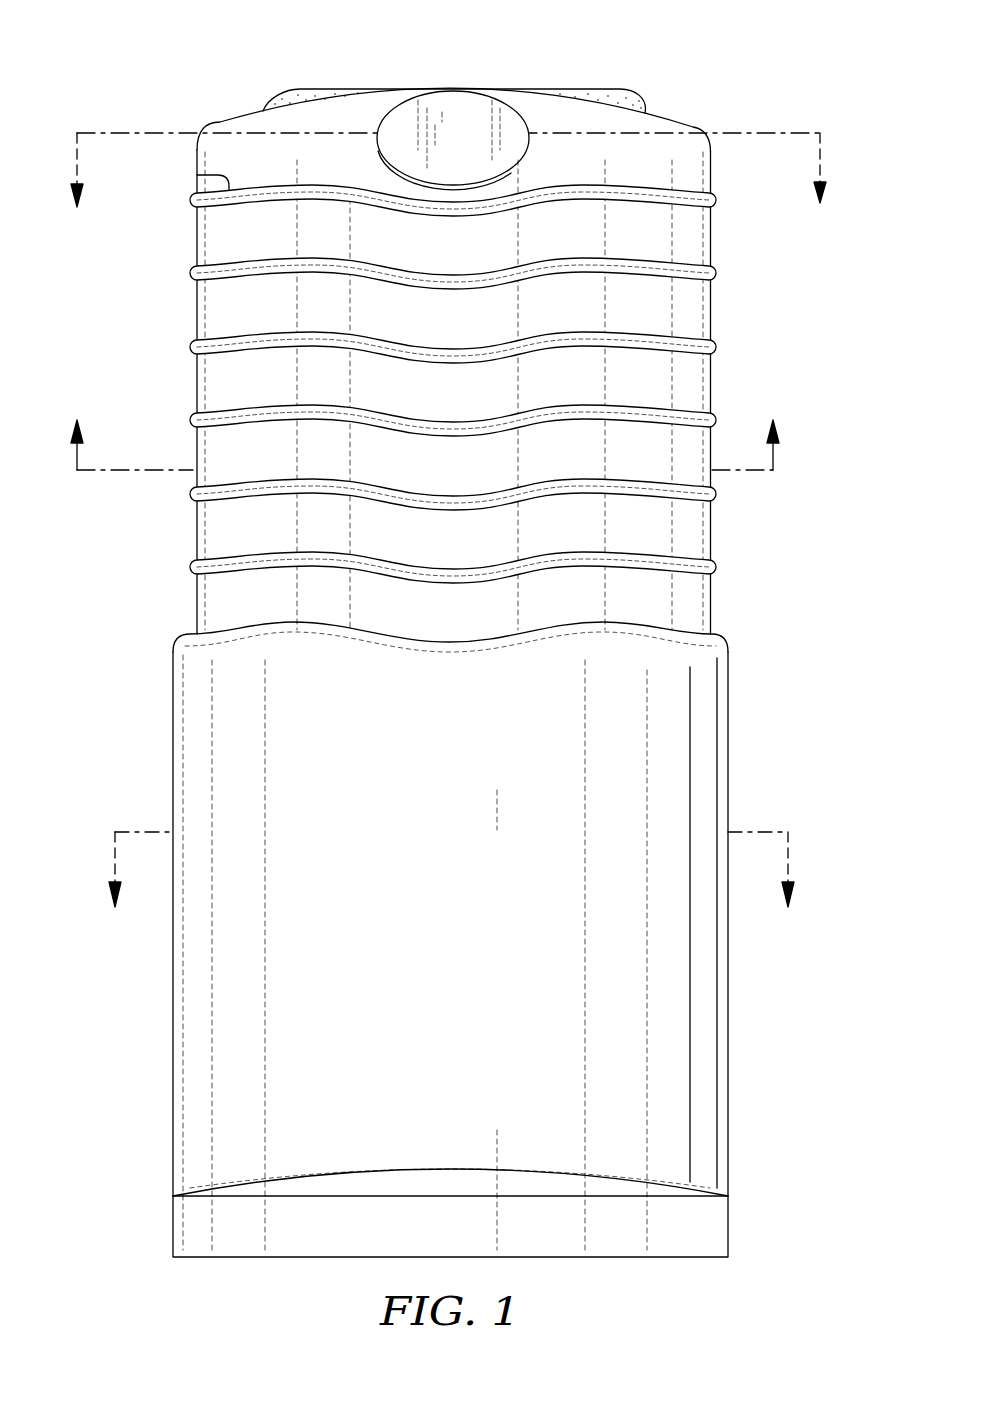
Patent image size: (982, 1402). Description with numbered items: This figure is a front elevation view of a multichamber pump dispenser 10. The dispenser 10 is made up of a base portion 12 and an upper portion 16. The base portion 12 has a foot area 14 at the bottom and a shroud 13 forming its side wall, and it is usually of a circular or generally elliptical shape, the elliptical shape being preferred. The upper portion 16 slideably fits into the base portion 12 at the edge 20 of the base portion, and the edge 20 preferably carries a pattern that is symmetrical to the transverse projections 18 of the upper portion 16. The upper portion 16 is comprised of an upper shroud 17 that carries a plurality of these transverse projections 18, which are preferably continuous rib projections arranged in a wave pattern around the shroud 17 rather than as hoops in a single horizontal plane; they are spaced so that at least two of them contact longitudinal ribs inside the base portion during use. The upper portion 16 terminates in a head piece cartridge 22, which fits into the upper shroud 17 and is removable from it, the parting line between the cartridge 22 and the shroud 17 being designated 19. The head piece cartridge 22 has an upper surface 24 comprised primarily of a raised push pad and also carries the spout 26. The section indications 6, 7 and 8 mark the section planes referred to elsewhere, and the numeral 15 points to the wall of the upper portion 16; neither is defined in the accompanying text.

The section line 6- 6 is at (452, 889).
The section line 7- 7 is at (427, 427).
The section line 8- 8 is at (449, 190).
The dispenser 10 is at (455, 628).
The base portion 12 is at (757, 1002).
The shroud 13 is at (202, 1032).
The foot area 14 is at (718, 1225).
The upper side wall 15 is at (657, 378).
The upper portion 16 is at (736, 305).
The shroud 17 is at (195, 305).
The transverse projections 18 is at (192, 344).
The parting line 19 is at (197, 176).
The edge 20 is at (192, 636).
The head piece cartridge 22 is at (712, 157).
The upper surface 24 is at (598, 86).
The spout 26 is at (448, 103).